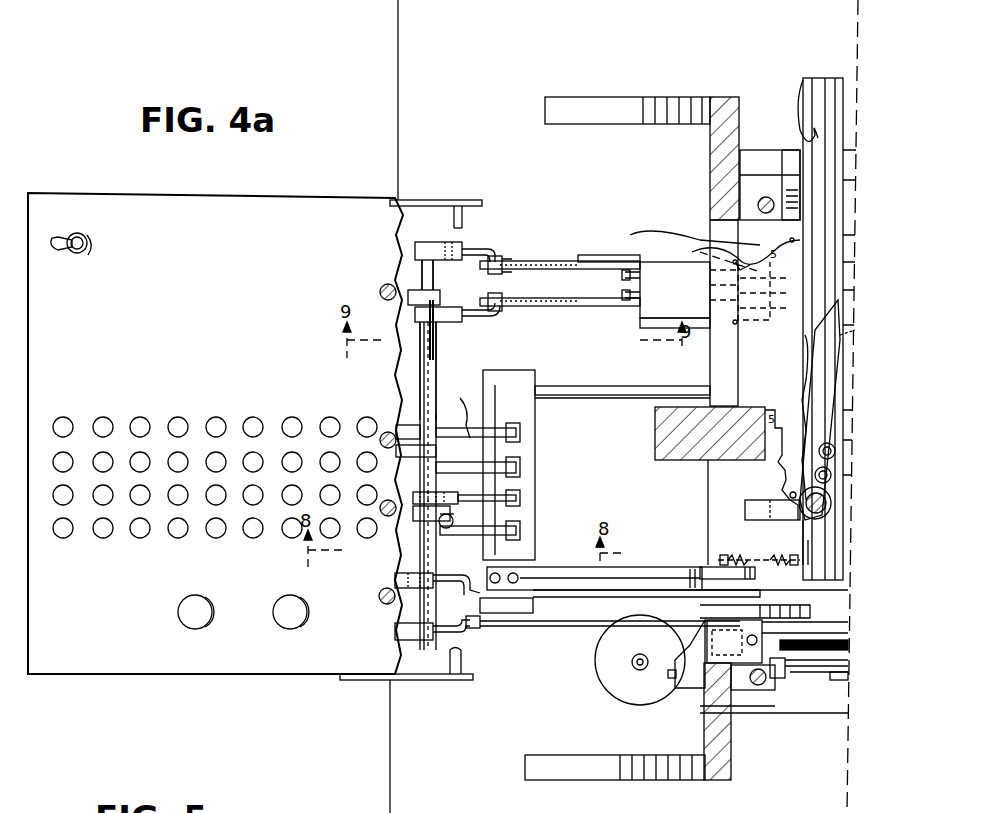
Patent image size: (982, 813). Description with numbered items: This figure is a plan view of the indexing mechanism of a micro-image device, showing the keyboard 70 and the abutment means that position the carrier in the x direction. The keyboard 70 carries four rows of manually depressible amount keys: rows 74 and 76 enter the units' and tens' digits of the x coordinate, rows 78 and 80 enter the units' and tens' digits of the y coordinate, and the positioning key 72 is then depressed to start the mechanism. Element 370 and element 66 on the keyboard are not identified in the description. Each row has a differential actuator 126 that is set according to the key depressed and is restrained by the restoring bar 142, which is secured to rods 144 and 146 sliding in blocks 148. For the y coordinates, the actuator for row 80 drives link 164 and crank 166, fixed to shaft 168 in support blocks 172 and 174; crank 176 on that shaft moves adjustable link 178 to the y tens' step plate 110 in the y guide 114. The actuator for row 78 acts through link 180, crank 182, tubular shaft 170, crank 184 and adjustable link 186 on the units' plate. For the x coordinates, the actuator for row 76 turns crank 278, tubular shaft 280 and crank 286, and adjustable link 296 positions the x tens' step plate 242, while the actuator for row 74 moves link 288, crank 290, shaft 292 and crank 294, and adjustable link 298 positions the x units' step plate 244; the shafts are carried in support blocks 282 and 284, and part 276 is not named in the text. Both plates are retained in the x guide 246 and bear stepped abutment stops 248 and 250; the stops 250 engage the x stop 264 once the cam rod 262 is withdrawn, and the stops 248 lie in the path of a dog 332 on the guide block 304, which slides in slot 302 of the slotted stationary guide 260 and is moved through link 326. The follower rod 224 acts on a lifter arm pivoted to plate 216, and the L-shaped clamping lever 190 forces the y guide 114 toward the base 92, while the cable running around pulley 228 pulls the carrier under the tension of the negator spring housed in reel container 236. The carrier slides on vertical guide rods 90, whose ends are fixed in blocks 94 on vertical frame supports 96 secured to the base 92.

The keyboard 70 is at (93, 700).
The base 92 is at (410, 802).
The indicator lamp 370 is at (90, 250).
The key row 80 is at (58, 418).
The key row 78 is at (56, 460).
The key row 76 is at (56, 494).
The key row 74 is at (55, 526).
The aperture 66 is at (184, 608).
The positioning key 72 is at (280, 608).
The crank 294 is at (442, 242).
The shaft 292 is at (430, 270).
The support block 284 is at (402, 288).
The crank 286 is at (450, 320).
The tubular shaft 280 is at (438, 362).
The adjustable link 298 is at (548, 261).
The adjustable link 296 is at (548, 302).
The restoring bar 142 is at (500, 370).
The rod 144 is at (575, 386).
The link 164 is at (492, 380).
The crank 166 is at (400, 425).
The support block 172 is at (398, 445).
The crank 182 is at (378, 430).
The link 180 is at (490, 464).
The differential actuator 126 is at (470, 558).
The crank 278 is at (520, 495).
The block 276 is at (495, 497).
The link 288 is at (495, 530).
The crank 290 is at (455, 533).
The support block 282 is at (392, 520).
The rod 146 is at (560, 575).
The tubular shaft 170 is at (395, 580).
The support block 174 is at (395, 600).
The shaft 168 is at (395, 628).
The crank 184 is at (462, 594).
The crank 176 is at (430, 645).
The adjustable link 178 is at (525, 630).
The adjustable link 186 is at (582, 598).
The follower rod 224 is at (653, 545).
The y guide 114 is at (706, 565).
The vertical frame support 96 is at (718, 98).
The x tens' step plate 242 is at (755, 340).
The plate 216 is at (712, 478).
The block 94 is at (765, 196).
The x stop 264 is at (788, 150).
The slotted stationary guide 260 is at (828, 78).
The slot 302 is at (808, 82).
The cam rod 262 is at (628, 250).
The x units' step plate 244 is at (720, 246).
The x guide 246 is at (700, 255).
The abutment stops 250 is at (738, 322).
The block 148 is at (712, 372).
The guide block 304 is at (810, 356).
The link 326 is at (804, 380).
The abutment stops 248 is at (782, 462).
The dog 332 is at (804, 550).
The reel container 236 is at (637, 700).
The y tens' step plate 110 is at (660, 645).
The clamping lever 190 is at (770, 655).
The vertical guide rod 90 is at (768, 690).
The pulley 228 is at (803, 685).